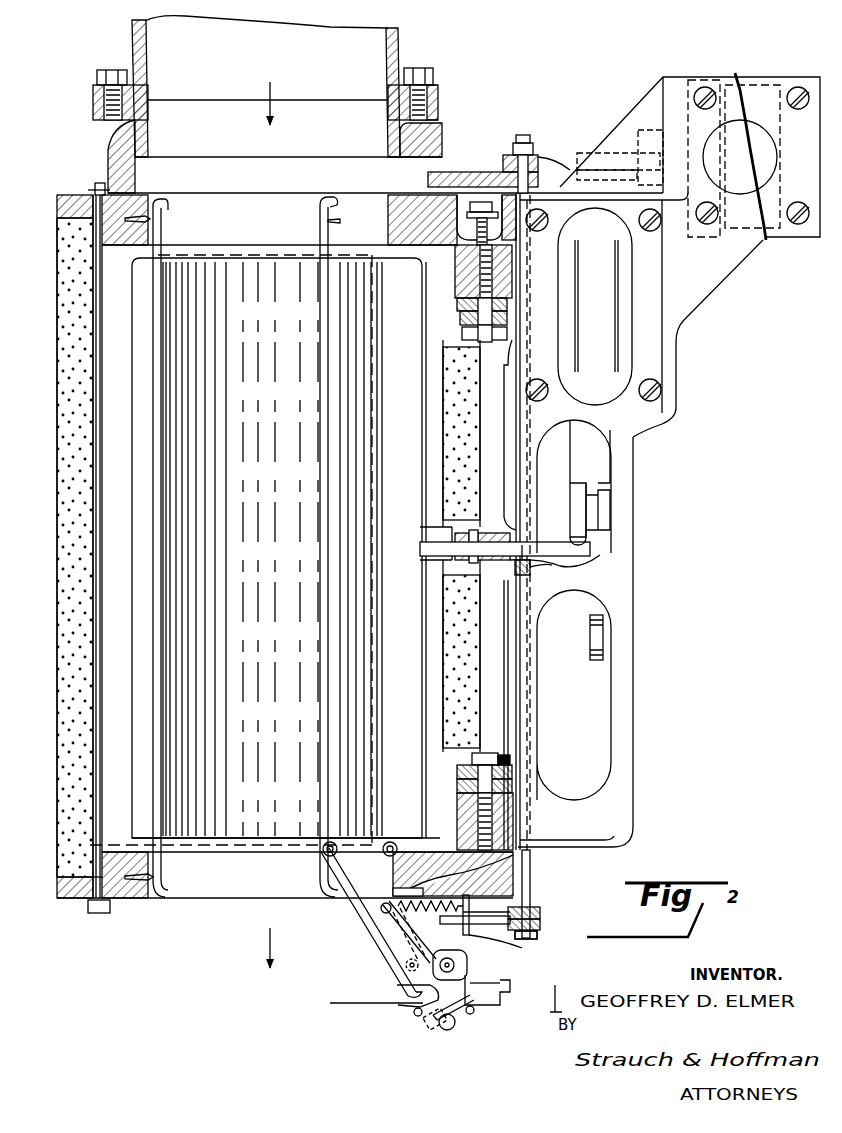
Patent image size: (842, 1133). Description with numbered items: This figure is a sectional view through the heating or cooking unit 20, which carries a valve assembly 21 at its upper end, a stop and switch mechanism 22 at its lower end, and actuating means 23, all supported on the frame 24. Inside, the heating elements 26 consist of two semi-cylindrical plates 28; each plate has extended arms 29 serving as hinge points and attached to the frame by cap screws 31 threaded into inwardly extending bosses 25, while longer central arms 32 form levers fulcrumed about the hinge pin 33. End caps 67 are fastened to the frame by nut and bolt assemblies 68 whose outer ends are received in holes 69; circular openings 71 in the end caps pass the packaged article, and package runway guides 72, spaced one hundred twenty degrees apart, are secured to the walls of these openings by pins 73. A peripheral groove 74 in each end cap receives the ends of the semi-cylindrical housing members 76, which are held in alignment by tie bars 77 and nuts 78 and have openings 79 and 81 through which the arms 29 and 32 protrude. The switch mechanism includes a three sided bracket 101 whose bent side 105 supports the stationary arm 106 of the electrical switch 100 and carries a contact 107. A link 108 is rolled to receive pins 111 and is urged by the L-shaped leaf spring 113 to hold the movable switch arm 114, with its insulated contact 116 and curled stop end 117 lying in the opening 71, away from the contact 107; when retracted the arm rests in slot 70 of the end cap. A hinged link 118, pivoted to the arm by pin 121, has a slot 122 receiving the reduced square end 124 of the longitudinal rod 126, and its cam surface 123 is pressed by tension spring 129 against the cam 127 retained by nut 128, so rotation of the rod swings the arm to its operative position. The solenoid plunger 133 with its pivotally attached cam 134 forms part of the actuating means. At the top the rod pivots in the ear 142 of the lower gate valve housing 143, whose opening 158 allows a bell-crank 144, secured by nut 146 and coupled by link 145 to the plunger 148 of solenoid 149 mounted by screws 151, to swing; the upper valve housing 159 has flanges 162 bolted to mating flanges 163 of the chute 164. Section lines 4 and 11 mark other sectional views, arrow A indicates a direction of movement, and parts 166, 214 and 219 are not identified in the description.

The section line 4- 4 is at (40, 540).
The section line 11- 11 is at (355, 945).
The heating or cooking unit 20 is at (82, 950).
The valve assembly 21 is at (456, 66).
The stop and switch mechanism 22 is at (352, 920).
The actuating means 23 is at (662, 456).
The frame 24 is at (640, 690).
The inwardly extending bosses 25 is at (515, 272).
The heating elements 26 is at (240, 850).
The plates 28 is at (178, 555).
The extended arms 29 is at (457, 318).
The cap screws 31 is at (462, 333).
The longer arms 32 is at (455, 552).
The hinge pin 33 is at (470, 560).
The end caps 67 is at (60, 195).
The nut and bolt assemblies 68 is at (450, 195).
The holes 69 is at (528, 176).
The slot 70 is at (412, 852).
The circular openings 71 is at (180, 210).
The package runway guides 72 is at (152, 372).
The pins 73 is at (163, 230).
The groove 74 is at (65, 870).
The semi-cylindrical housing members 76 is at (60, 777).
The tie bars 77 is at (94, 486).
The nuts 78 is at (95, 190).
The openings 79 is at (455, 270).
The openings 81 is at (448, 528).
The electrical switch 100 is at (432, 1030).
The three sided bracket 101 is at (505, 983).
The side of bracket 105 is at (495, 1006).
The stationary arm 106 is at (455, 1015).
The contact 107 is at (447, 1030).
The link 108 is at (410, 1010).
The pins 111 is at (410, 1008).
The L-shaped leaf spring 113 is at (462, 958).
The movable switch arm 114 is at (406, 966).
The insulated contact 116 is at (420, 1022).
The curled end 117 is at (392, 846).
The hinged link 118 is at (395, 950).
The pin 121 is at (380, 905).
The slot 122 is at (454, 910).
The cam surface 123 is at (511, 927).
The reduced square end 124 is at (540, 910).
The rod 126 is at (530, 572).
The cam 127 is at (540, 924).
The nut 128 is at (537, 935).
The tension spring 129 is at (524, 135).
The plunger 133 is at (600, 455).
The cam 134 is at (600, 530).
The ear 142 is at (470, 175).
The lower gate valve housing 143 is at (112, 158).
The bell-crank 144 is at (540, 160).
The link 145 is at (608, 153).
The nut 146 is at (534, 148).
The plunger 148 is at (640, 130).
The solenoid 149 is at (698, 80).
The screws 151 is at (800, 88).
The opening 158 is at (442, 155).
The upper valve housing 159 is at (103, 128).
The flanges 162 is at (437, 110).
The mating flanges 163 is at (437, 90).
The chute 164 is at (396, 42).
The bolt head 166 is at (420, 68).
The stop 214 is at (557, 988).
The lever arm 219 is at (330, 1005).
The direction A is at (275, 845).